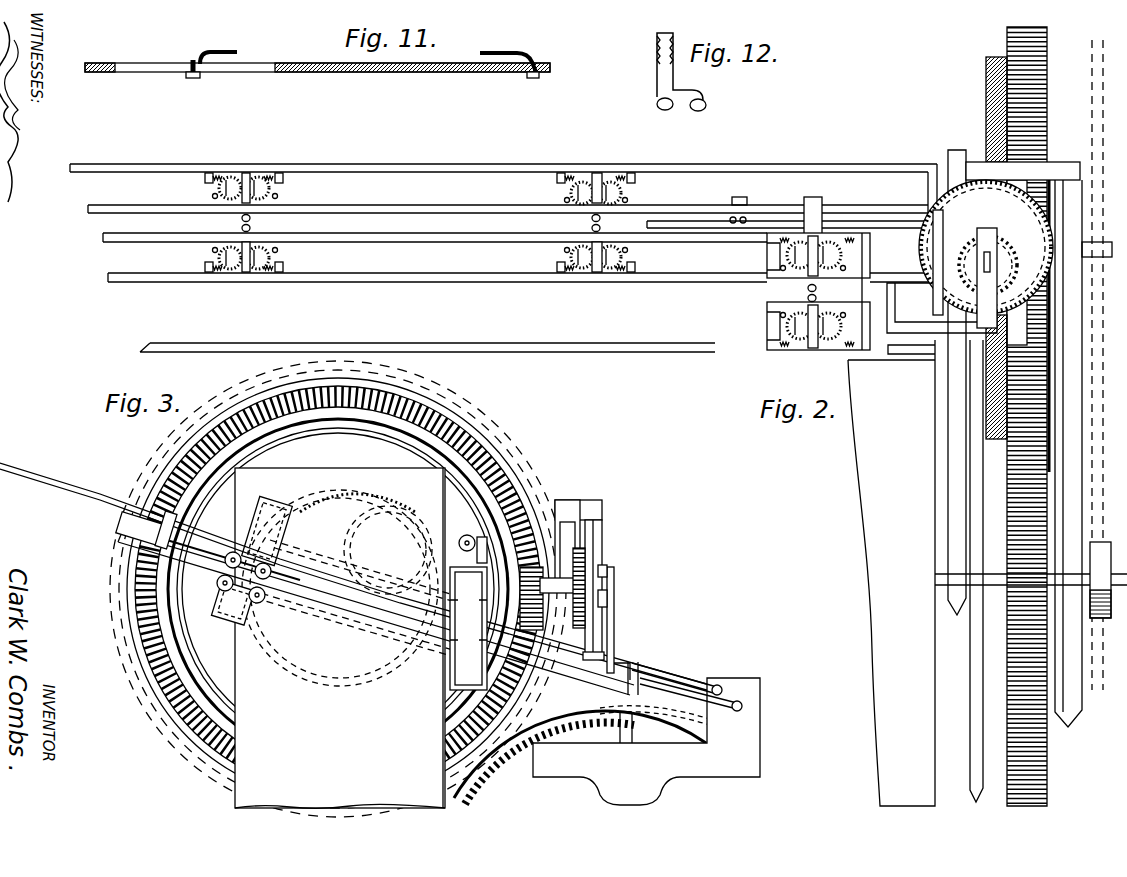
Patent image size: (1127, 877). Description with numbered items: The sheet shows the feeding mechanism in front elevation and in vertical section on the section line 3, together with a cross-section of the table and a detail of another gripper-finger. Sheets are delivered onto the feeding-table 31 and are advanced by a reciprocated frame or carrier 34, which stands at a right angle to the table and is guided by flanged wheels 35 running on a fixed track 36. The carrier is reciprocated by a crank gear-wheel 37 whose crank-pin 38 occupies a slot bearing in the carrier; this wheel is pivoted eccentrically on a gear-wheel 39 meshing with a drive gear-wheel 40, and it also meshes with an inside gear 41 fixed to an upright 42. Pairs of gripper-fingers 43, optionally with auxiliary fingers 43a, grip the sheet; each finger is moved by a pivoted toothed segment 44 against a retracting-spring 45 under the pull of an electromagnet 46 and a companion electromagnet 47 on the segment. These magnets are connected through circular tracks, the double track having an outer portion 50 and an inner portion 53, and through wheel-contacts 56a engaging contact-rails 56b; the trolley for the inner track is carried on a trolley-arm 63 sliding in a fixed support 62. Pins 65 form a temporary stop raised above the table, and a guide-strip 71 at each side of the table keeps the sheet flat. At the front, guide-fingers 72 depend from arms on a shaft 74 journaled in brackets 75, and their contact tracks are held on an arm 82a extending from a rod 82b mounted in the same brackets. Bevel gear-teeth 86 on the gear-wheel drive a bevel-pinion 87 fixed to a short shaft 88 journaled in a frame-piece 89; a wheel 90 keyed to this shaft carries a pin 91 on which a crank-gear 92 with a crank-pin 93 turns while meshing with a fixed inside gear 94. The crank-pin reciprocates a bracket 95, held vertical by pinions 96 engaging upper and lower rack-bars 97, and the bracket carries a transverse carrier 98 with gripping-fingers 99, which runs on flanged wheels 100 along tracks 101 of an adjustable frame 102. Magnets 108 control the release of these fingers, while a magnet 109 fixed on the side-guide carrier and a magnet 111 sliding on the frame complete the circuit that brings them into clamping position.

In FIG. 2, the section line 3 is at (665, 163).
In FIG. 11, the feeding-table 31 is at (317, 79).
In FIG. 3, the feeding-table 31 is at (560, 684).
In FIG. 2, the carrier 34 is at (838, 176).
In FIG. 3, the carrier 34 is at (250, 517).
In FIG. 3, the flanged wheels 35 is at (222, 586).
In FIG. 3, the fixed track 36 is at (340, 612).
In FIG. 3, the crank gear-wheel 37 is at (342, 546).
In FIG. 3, the crank-pin 38 is at (276, 554).
In FIG. 2, the gear-wheel 39 is at (1040, 107).
In FIG. 3, the gear-wheel 39 is at (487, 427).
In FIG. 2, the drive gear-wheel 40 is at (1048, 522).
In FIG. 3, the drive gear-wheel 40 is at (785, 762).
In FIG. 3, the inside gear 41 is at (410, 534).
In FIG. 2, the upright 42 is at (948, 162).
In FIG. 3, the upright 42 is at (170, 601).
In FIG. 12, the gripper-fingers 43 is at (658, 101).
In FIG. 2, the gripper-fingers 43 is at (252, 221).
In FIG. 3, the gripper-fingers 43 is at (440, 513).
In FIG. 12, the auxiliary fingers 43a is at (708, 102).
In FIG. 2, the toothed segment 44 is at (260, 178).
In FIG. 2, the retracting-spring 45 is at (282, 176).
In FIG. 2, the electromagnet 46 is at (279, 195).
In FIG. 2, the companion electromagnet 47 is at (628, 226).
In FIG. 3, the outer portion of double track 50 is at (140, 680).
In FIG. 3, the inner portion of double track 53 is at (165, 680).
In FIG. 3, the wheel-contacts 56a is at (400, 577).
In FIG. 3, the contact-rails 56b is at (372, 640).
In FIG. 3, the fixed support 62 is at (120, 546).
In FIG. 3, the trolley-arm 63 is at (146, 575).
In FIG. 3, the pins 65 is at (432, 612).
In FIG. 11, the guide-strip 71 is at (210, 53).
In FIG. 3, the guide-strip 71 is at (52, 481).
In FIG. 3, the guide-fingers 72 is at (630, 663).
In FIG. 3, the shaft 74 is at (722, 688).
In FIG. 3, the brackets 75 is at (762, 706).
In FIG. 3, the arm 82a is at (704, 674).
In FIG. 3, the rod 82b is at (733, 718).
In FIG. 2, the bevel gear-teeth 86 is at (988, 71).
In FIG. 3, the bevel gear-teeth 86 is at (450, 423).
In FIG. 3, the bevel-pinion 87 is at (520, 595).
In FIG. 3, the short shaft 88 is at (569, 588).
In FIG. 3, the frame-piece 89 is at (571, 546).
In FIG. 3, the wheel 90 is at (602, 548).
In FIG. 3, the pin 91 is at (585, 622).
In FIG. 2, the crank-gear 92 is at (968, 278).
In FIG. 2, the crank-pin 93 is at (1000, 262).
In FIG. 2, the fixed inside gear 94 is at (980, 185).
In FIG. 2, the bracket 95 is at (942, 308).
In FIG. 3, the bracket 95 is at (616, 641).
In FIG. 3, the pinions 96 is at (612, 600).
In FIG. 3, the rack-bars 97 is at (612, 570).
In FIG. 2, the transverse carrier 98 is at (820, 298).
In FIG. 2, the gripping-fingers 99 is at (805, 290).
In FIG. 3, the flanged wheels 100 is at (453, 541).
In FIG. 3, the tracks 101 is at (457, 558).
In FIG. 2, the adjustable frame 102 is at (700, 222).
In FIG. 3, the adjustable frame 102 is at (520, 536).
In FIG. 2, the magnets 108 is at (846, 266).
In FIG. 2, the magnet 109 is at (822, 206).
In FIG. 2, the magnet 111 is at (743, 204).